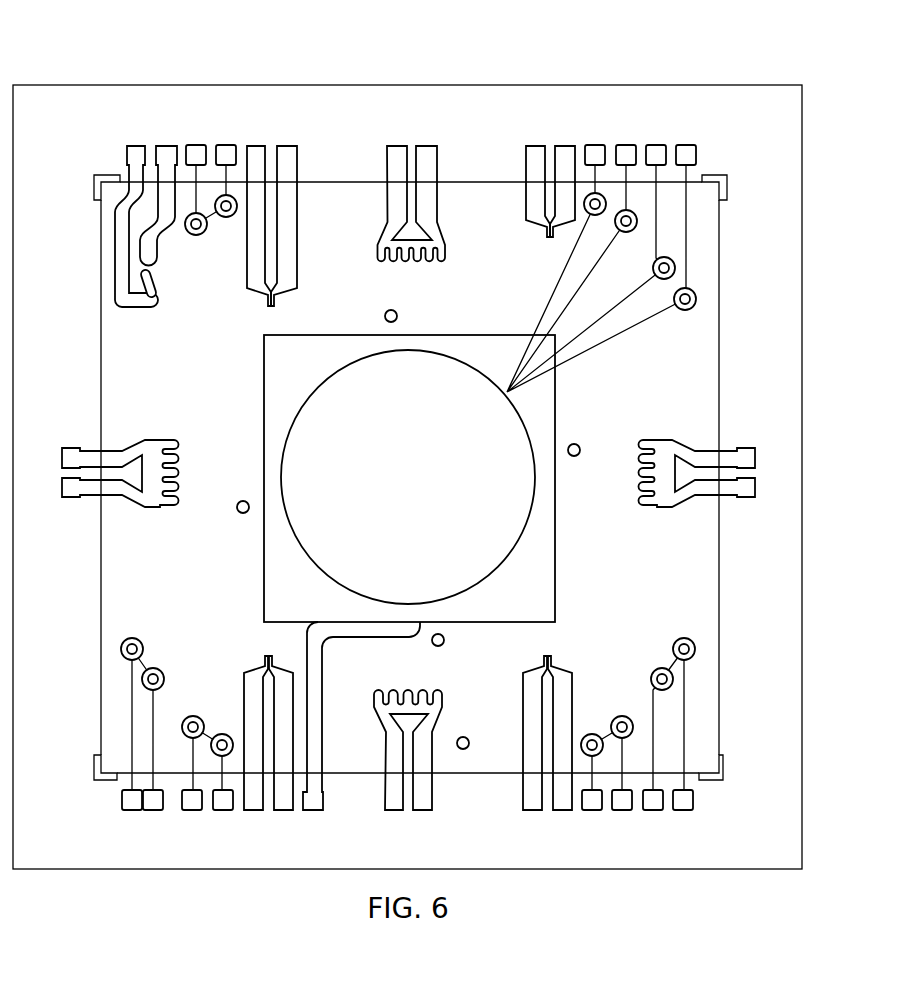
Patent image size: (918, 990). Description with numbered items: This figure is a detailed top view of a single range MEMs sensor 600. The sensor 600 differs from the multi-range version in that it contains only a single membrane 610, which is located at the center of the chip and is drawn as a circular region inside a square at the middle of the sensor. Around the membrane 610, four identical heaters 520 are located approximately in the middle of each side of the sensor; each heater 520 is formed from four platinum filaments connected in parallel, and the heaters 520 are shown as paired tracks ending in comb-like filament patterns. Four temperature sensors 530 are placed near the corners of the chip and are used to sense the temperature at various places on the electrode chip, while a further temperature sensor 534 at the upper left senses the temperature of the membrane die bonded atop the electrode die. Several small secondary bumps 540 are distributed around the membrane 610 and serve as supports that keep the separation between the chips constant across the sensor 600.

The single range MEMs sensor 600 is at (218, 58).
The heater 520 is at (423, 146).
The temperature sensor 530 is at (256, 146).
The temperature sensor 534 is at (136, 146).
The secondary bump 540 is at (576, 443).
The membrane 610 is at (388, 491).